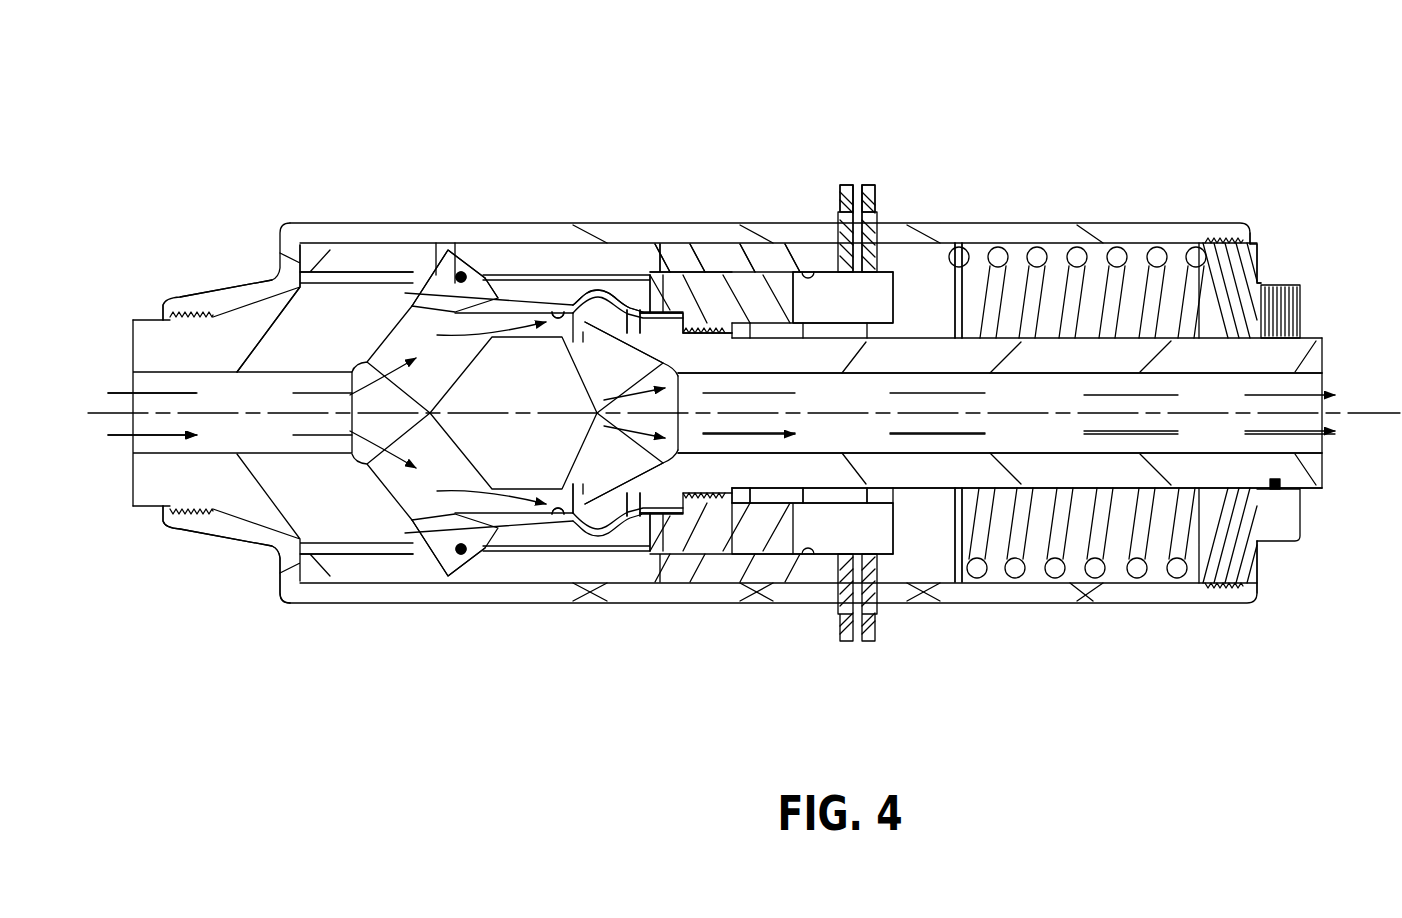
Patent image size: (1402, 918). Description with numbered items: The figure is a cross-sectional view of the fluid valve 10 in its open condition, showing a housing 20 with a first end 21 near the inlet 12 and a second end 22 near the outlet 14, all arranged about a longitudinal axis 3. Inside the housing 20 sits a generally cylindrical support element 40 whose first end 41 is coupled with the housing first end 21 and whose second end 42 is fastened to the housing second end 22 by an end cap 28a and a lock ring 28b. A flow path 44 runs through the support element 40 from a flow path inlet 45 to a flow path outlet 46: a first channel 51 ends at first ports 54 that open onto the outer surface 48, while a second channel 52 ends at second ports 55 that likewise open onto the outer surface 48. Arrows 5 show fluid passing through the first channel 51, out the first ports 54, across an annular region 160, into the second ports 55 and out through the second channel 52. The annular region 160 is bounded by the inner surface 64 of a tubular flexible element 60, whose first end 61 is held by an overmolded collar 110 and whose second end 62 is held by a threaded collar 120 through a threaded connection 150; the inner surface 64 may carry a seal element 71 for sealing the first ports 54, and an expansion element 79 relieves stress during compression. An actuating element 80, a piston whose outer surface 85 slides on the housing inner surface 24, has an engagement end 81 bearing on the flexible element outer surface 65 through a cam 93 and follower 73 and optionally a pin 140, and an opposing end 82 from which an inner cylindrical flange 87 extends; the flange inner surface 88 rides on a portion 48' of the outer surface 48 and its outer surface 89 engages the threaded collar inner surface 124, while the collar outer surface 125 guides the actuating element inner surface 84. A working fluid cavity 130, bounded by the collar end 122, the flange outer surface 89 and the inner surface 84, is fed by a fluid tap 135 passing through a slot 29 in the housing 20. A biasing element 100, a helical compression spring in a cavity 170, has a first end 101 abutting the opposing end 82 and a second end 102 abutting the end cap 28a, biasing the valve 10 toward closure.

The longitudinal axis 3 is at (100, 400).
The arrows 5 is at (148, 433).
The fluid valve 10 is at (985, 760).
The inlet 12 is at (107, 427).
The outlet 14 is at (1348, 426).
The housing 20 is at (1143, 223).
The first end of housing 21 is at (170, 295).
The second end of housing 22 is at (1223, 603).
The inner surface of housing 24 is at (935, 490).
The end cap 28a is at (1283, 541).
The lock ring 28b is at (1262, 270).
The slot 29 is at (888, 237).
The support element 40 is at (1160, 500).
The first end of support element 41 is at (148, 340).
The second end of support element 42 is at (1300, 545).
The flow path 44 is at (1102, 386).
The flow path inlet 45 is at (170, 430).
The flow path outlet 46 is at (1290, 300).
The outer surface of support element 48 is at (513, 546).
The portion of outer surface of support element 48' is at (936, 209).
The first channel 51 is at (233, 392).
The second channel 52 is at (1045, 500).
The first ports 54 is at (397, 358).
The second ports 55 is at (640, 300).
The flexible element 60 is at (395, 290).
The first end of flexible element 61 is at (332, 273).
The second end of flexible element 62 is at (670, 275).
The inner surface of flexible element 64 is at (575, 292).
The outer surface of flexible element 65 is at (524, 300).
The seal element 71 is at (437, 560).
The follower 73 is at (432, 282).
The expansion element 79 is at (575, 520).
The actuating element 80 is at (740, 318).
The engagement end 81 is at (497, 276).
The opposing end 82 is at (990, 545).
The inner surface of actuating element 84 is at (815, 290).
The outer surface of actuating element 85 is at (775, 262).
The inner cylindrical flange 87 is at (830, 500).
The inner surface of inner cylindrical flange 88 is at (885, 490).
The outer surface of inner cylindrical flange 89 is at (866, 500).
The cam 93 is at (462, 275).
The biasing element 100 is at (1015, 280).
The first end of biasing element 101 is at (975, 290).
The second end of biasing element 102 is at (1180, 280).
The overmolded collar 110 is at (333, 603).
The threaded collar 120 is at (700, 560).
The end of threaded collar 122 is at (800, 500).
The inner surface of threaded collar 124 is at (760, 520).
The outer surface of threaded collar 125 is at (665, 540).
The working fluid cavity 130 is at (840, 230).
The fluid tap 135 is at (865, 185).
The pin 140 is at (460, 560).
The threaded connection 150 is at (707, 290).
The annular region 160 is at (540, 540).
The cavity 170 is at (1120, 560).